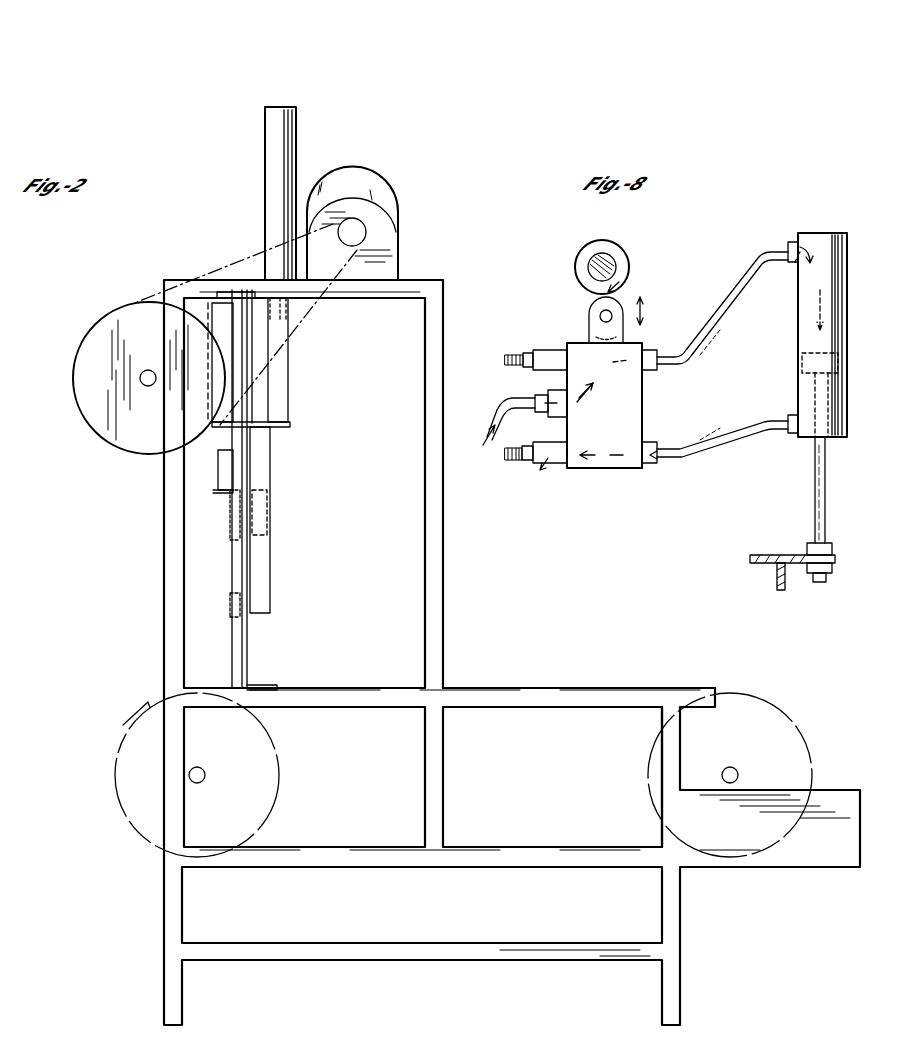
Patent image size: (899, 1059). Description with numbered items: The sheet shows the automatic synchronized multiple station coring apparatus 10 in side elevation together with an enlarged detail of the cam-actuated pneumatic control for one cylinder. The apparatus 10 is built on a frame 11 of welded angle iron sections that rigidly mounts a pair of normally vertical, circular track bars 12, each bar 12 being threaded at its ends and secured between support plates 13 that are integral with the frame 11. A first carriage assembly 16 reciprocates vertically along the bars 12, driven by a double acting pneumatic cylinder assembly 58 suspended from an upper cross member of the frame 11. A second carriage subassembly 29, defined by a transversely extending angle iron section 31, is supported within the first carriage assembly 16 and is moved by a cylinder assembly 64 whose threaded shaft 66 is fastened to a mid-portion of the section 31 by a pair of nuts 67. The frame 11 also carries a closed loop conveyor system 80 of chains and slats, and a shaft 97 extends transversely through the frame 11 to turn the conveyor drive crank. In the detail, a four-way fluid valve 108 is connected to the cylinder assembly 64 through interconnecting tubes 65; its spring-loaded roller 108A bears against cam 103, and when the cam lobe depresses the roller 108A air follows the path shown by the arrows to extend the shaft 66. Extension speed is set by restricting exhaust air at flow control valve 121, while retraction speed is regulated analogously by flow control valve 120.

In FIG. 2, the automatic synchronized multiple station coring apparatus 10 is at (417, 196).
In FIG. 2, the frame 11 is at (162, 907).
In FIG. 2, the track bars 12 is at (258, 646).
In FIG. 2, the support plates 13 is at (240, 292).
In FIG. 2, the first carriage assembly 16 is at (283, 589).
In FIG. 2, the second carriage subassembly 29 is at (276, 499).
In FIG. 8, the angle iron section 31 is at (765, 567).
In FIG. 2, the pneumatic cylinder assembly 58 is at (286, 169).
In FIG. 2, the cylinder assembly 64 is at (217, 317).
In FIG. 8, the cylinder assembly 64 is at (808, 332).
In FIG. 8, the interconnecting tubes 65 is at (695, 340).
In FIG. 8, the shaft 66 is at (817, 493).
In FIG. 8, the nuts 67 is at (833, 565).
In FIG. 2, the closed loop conveyor system 80 is at (543, 689).
In FIG. 8, the shaft 97 is at (595, 263).
In FIG. 8, the cam 103 is at (630, 270).
In FIG. 8, the four-way fluid valve 108 is at (642, 405).
In FIG. 8, the roller 108A is at (628, 294).
In FIG. 8, the flow control valve 120 is at (560, 334).
In FIG. 8, the flow control valve 121 is at (538, 463).